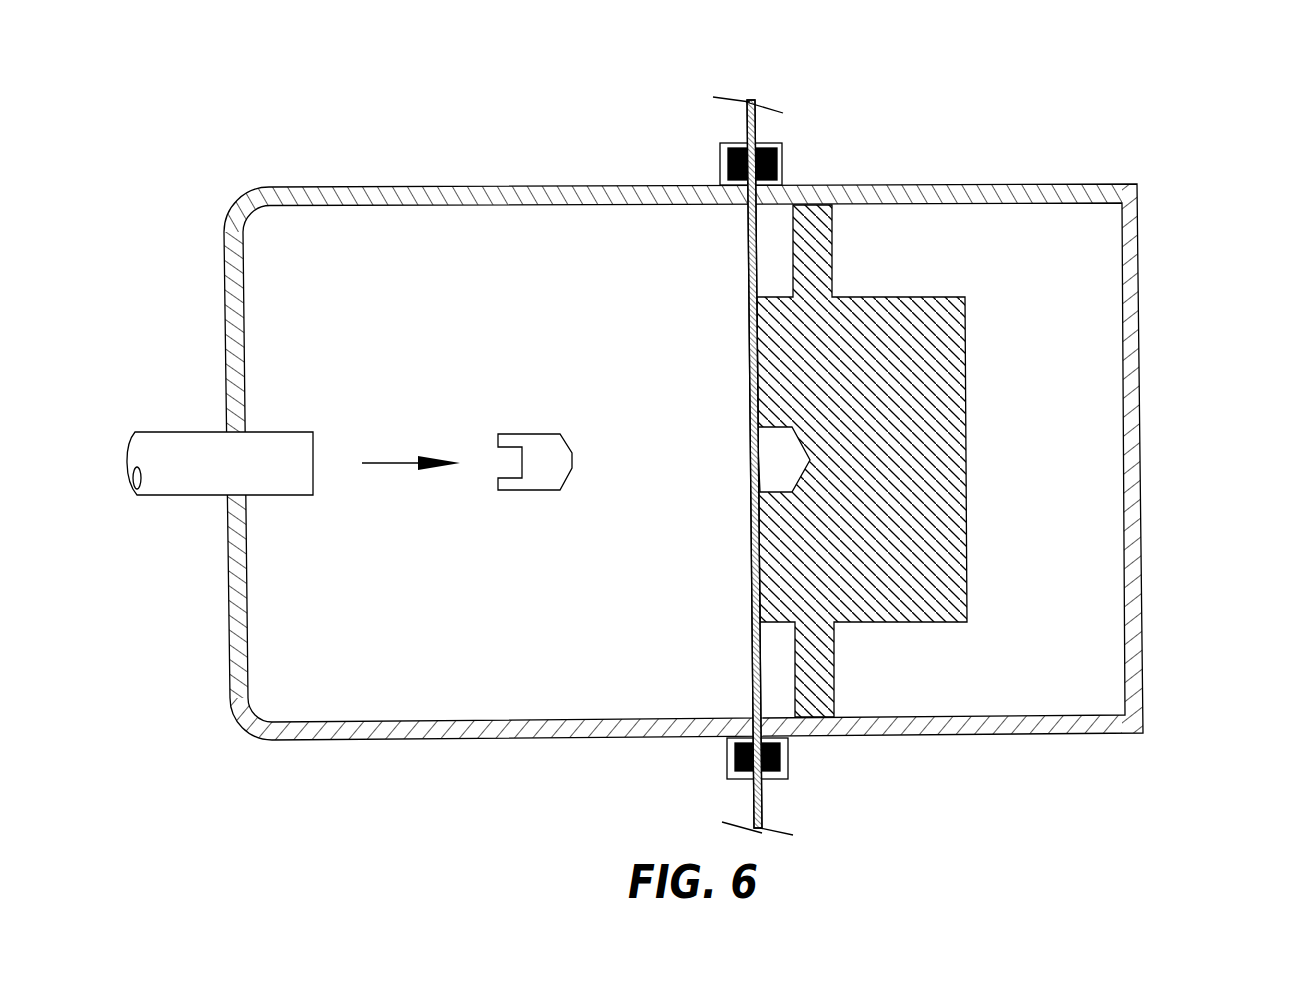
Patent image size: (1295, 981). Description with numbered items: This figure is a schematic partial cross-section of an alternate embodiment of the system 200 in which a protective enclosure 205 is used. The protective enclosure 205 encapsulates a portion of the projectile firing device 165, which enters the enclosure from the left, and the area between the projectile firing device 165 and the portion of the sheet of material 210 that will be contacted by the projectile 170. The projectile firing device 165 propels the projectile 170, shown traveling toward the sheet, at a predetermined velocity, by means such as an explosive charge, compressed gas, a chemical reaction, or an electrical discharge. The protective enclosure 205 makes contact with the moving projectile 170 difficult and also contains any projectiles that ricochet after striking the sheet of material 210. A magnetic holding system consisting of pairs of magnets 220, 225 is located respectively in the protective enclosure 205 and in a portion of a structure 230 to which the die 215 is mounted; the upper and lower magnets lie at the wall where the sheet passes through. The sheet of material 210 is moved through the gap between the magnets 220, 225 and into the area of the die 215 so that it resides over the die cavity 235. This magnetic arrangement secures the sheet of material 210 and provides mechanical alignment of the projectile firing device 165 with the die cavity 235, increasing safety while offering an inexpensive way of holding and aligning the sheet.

The system 200 is at (642, 451).
The protective enclosure 205 is at (437, 738).
The sheet of material 210 is at (748, 292).
The die 215 is at (792, 461).
The magnets 220 is at (722, 168).
The magnets 225 is at (782, 162).
The structure 230 is at (1082, 348).
The die cavity 235 is at (772, 459).
The projectile firing device 165 is at (185, 478).
The projectile 170 is at (547, 443).